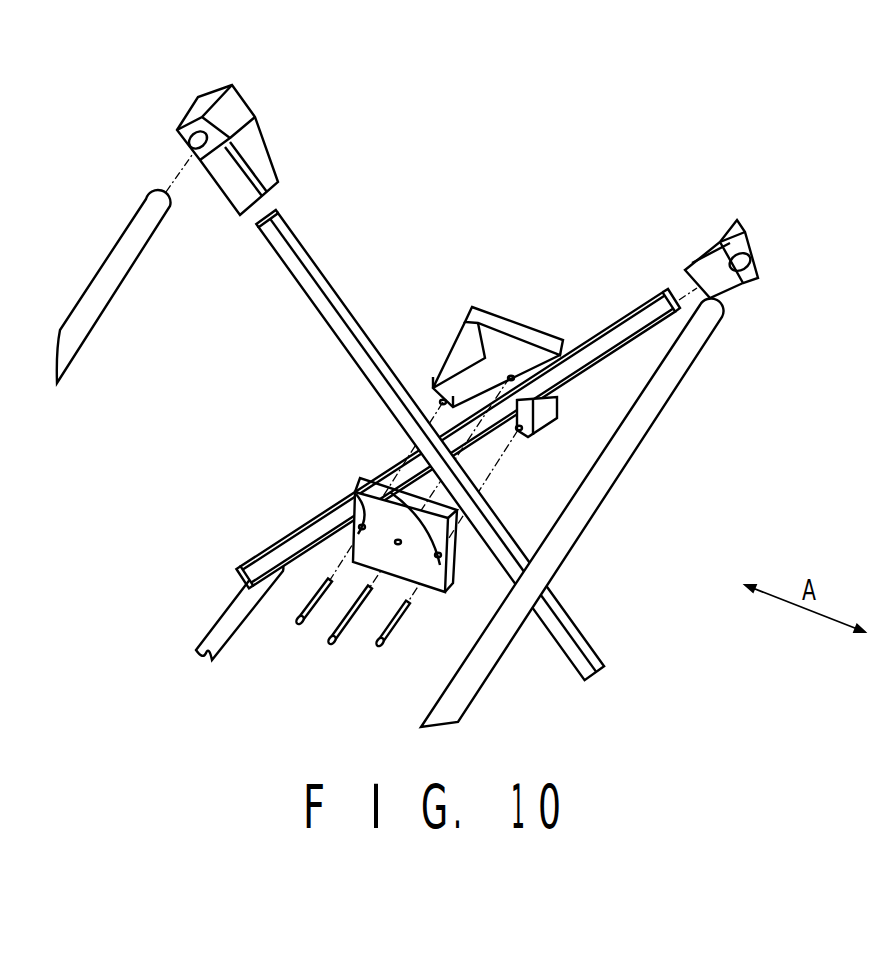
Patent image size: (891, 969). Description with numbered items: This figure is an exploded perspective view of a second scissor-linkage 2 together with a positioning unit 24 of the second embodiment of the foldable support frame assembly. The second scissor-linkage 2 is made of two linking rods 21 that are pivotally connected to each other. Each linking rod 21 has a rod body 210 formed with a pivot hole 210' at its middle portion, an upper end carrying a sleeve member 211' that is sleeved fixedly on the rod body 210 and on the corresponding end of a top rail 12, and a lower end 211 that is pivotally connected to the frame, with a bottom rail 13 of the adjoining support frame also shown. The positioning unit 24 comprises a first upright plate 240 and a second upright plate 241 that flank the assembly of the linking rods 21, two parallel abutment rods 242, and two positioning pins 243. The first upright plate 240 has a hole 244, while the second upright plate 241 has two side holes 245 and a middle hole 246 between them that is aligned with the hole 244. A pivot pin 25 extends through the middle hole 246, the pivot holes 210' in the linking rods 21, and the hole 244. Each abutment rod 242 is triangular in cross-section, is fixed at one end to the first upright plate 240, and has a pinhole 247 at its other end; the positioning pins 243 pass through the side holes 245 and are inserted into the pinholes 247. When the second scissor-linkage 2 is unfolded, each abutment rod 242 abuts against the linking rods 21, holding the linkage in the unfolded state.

The second scissor-linkage 2 is at (453, 197).
The top rail 12 is at (603, 488).
The bottom rail 13 is at (223, 628).
The linking rod 21 is at (633, 323).
The positioning unit 24 is at (550, 275).
The pivot pin 25 is at (338, 648).
The rod body 210 is at (507, 401).
The pivot hole 210' is at (458, 436).
The lower end 211 is at (205, 504).
The sleeve member 211' is at (263, 132).
The first upright plate 240 is at (500, 315).
The second upright plate 241 is at (440, 590).
The abutment rod 242 is at (443, 400).
The positioning pin 243 is at (300, 622).
The hole 244 is at (472, 307).
The side hole 245 is at (353, 490).
The middle hole 246 is at (398, 542).
The pinhole 247 is at (442, 402).